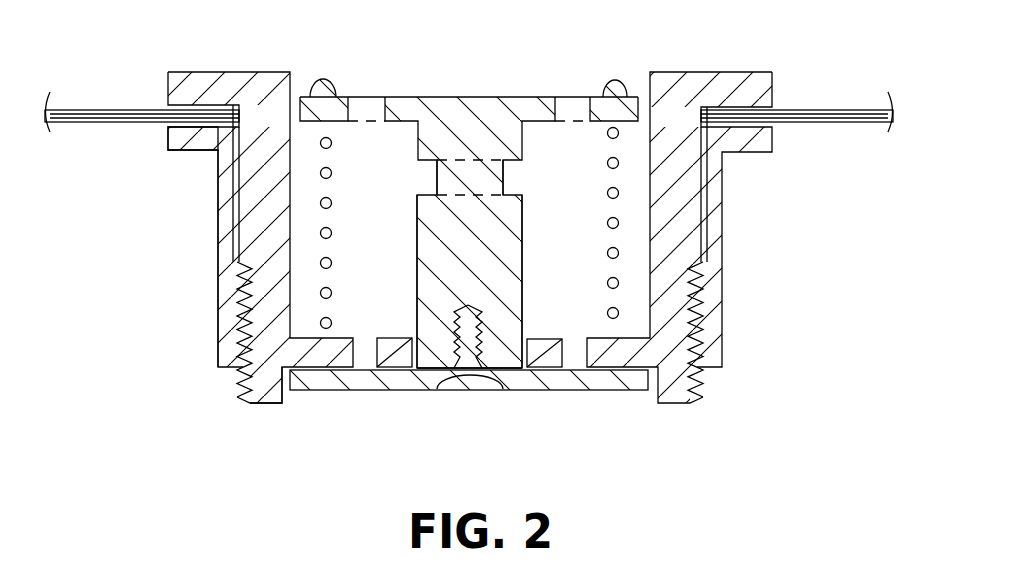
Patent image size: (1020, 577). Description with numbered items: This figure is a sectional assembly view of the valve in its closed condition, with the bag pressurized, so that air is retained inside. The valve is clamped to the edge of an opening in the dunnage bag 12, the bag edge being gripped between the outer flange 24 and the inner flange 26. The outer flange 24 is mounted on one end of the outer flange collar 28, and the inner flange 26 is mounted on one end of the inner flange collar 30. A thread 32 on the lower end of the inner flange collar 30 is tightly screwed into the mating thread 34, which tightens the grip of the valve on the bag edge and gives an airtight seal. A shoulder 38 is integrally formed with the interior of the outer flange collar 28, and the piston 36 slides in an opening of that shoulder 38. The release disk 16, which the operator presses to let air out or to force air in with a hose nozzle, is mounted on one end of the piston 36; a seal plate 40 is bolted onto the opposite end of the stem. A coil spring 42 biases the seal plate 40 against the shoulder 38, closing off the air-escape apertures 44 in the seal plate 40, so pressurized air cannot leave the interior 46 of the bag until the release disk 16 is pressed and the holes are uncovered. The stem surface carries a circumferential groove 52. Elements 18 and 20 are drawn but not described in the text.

The dunnage bag 12 is at (98, 110).
The release disk 16 is at (408, 102).
The spacer 18 is at (370, 100).
The locating bump 20 is at (615, 83).
The outer flange 24 is at (218, 78).
The inner flange 26 is at (320, 85).
The outer flange collar 28 is at (262, 231).
The inner flange collar 30 is at (222, 278).
The thread 32 is at (258, 378).
The thread 34 is at (255, 337).
The piston 36 is at (432, 242).
The shoulder 38 is at (548, 338).
The seal plate 40 is at (372, 390).
The coil spring 42 is at (612, 222).
The air-escape apertures 44 is at (362, 338).
The interior of the bag 46 is at (702, 438).
The circumferential groove 52 is at (508, 178).